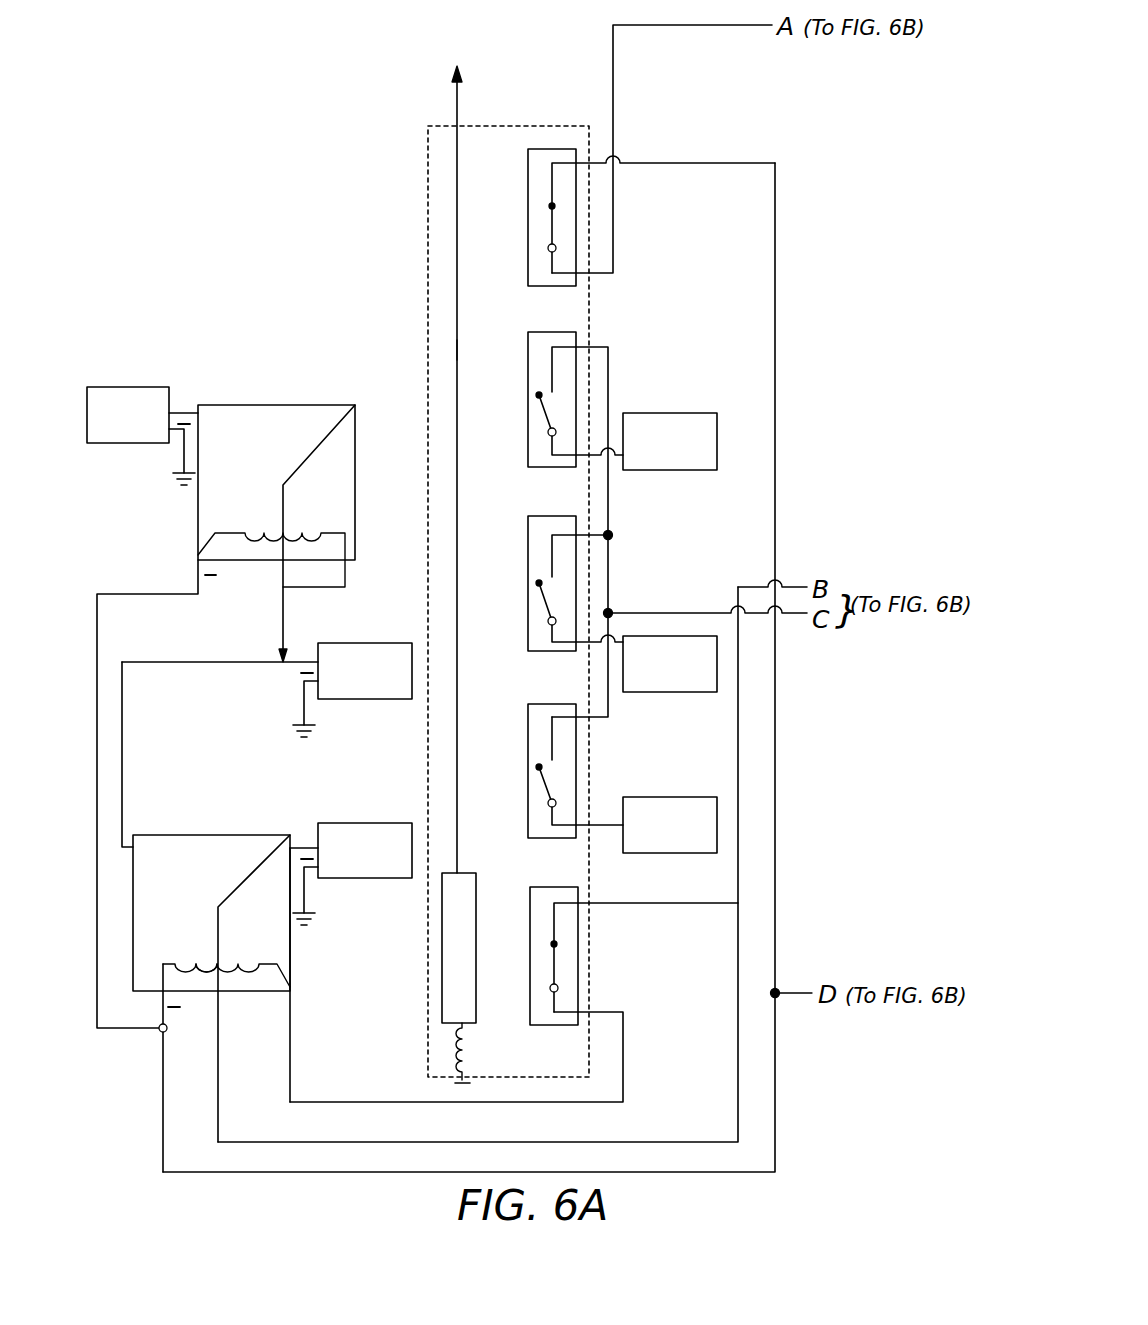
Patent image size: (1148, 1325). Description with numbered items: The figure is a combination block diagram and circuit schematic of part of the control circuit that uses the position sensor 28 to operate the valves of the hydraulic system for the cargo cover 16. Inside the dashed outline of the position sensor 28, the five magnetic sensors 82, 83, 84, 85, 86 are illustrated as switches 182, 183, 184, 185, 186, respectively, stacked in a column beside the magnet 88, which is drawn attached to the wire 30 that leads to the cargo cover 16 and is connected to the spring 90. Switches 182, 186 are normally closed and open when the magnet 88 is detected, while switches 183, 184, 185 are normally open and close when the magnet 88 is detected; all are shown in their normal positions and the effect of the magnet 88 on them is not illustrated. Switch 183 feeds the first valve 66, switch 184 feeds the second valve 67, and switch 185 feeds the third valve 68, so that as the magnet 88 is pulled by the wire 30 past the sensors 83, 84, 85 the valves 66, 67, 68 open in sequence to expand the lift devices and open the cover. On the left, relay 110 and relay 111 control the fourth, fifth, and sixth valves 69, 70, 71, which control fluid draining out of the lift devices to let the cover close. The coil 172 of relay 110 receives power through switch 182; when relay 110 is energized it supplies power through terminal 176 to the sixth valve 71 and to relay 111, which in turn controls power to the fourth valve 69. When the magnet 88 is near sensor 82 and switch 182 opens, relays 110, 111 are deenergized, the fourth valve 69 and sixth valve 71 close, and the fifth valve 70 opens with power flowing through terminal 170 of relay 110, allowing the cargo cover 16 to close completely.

The cargo cover 16 is at (462, 440).
The position sensor 28 is at (535, 126).
The wire 30 is at (457, 347).
The first valve 66 is at (650, 797).
The second valve 67 is at (690, 692).
The third valve 68 is at (683, 413).
The fourth valve 69 is at (147, 387).
The fifth valve 70 is at (362, 823).
The sixth valve 71 is at (358, 643).
The first sensor 82 is at (530, 912).
The second sensor 83 is at (528, 733).
The third sensor 84 is at (528, 545).
The fourth sensor 85 is at (528, 357).
The fifth sensor 86 is at (528, 172).
The magnet 88 is at (442, 1007).
The spring 90 is at (453, 1044).
The relay 110 is at (180, 835).
The relay 111 is at (247, 405).
The terminal 170 is at (218, 1002).
The coil 172 is at (226, 958).
The terminal 176 is at (122, 778).
The switch 182 is at (550, 988).
The switch 183 is at (548, 803).
The switch 184 is at (548, 621).
The switch 185 is at (548, 432).
The switch 186 is at (548, 248).